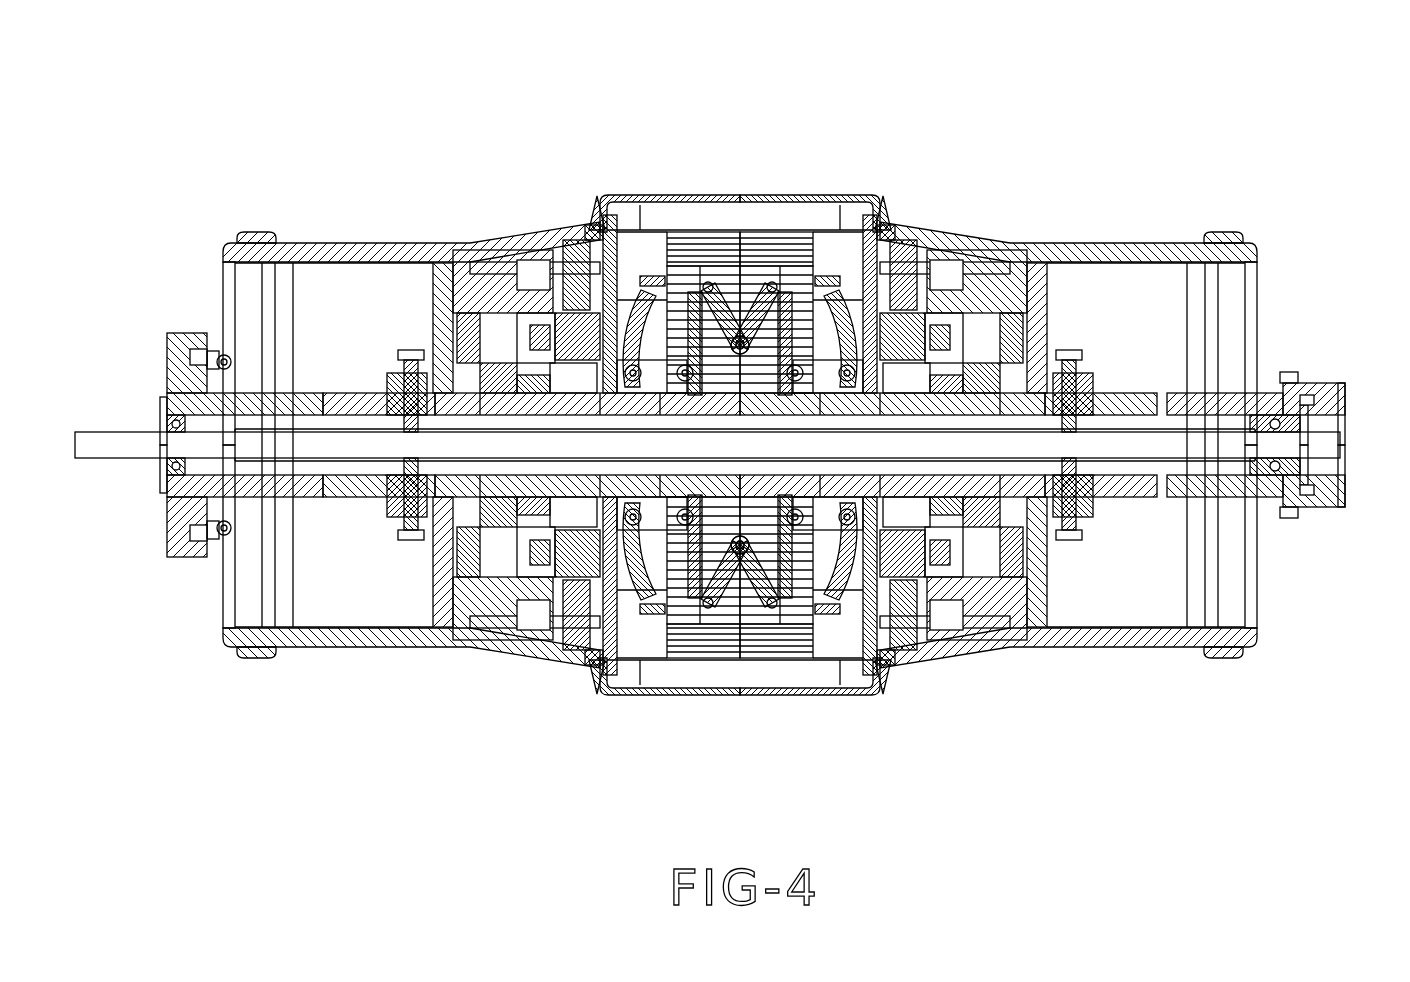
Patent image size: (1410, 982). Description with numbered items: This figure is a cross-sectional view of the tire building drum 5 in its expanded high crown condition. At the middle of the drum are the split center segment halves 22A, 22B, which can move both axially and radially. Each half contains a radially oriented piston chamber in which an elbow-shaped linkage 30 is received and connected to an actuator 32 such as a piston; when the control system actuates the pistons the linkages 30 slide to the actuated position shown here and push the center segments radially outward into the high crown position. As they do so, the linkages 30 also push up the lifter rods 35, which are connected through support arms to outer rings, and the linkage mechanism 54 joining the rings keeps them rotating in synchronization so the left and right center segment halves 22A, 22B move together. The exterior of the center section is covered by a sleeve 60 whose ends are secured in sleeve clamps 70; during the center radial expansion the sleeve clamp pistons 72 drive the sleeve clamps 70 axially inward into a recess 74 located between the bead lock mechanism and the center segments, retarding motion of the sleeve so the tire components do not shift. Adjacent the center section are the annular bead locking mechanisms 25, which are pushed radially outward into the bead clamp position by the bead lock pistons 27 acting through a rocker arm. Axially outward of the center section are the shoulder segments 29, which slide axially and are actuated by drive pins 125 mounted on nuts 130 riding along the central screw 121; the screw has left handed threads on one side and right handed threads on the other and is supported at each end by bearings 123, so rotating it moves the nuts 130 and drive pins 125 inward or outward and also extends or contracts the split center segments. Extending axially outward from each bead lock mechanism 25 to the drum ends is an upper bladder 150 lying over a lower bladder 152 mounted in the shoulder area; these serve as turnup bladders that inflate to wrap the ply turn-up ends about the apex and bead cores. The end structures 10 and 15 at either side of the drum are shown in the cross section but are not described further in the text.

The tire building drum 5 is at (150, 160).
The left end flange 10 is at (185, 333).
The right end flange 15 is at (1345, 398).
The center segment half 22A is at (818, 245).
The center segment half 22B is at (668, 245).
The bead locking mechanism 25 is at (575, 240).
The bead lock piston 27 is at (540, 323).
The shoulder segment 29 is at (605, 665).
The elbow-shaped linkage 30 is at (640, 292).
The actuator 32 is at (545, 585).
The lifter rod 35 is at (700, 240).
The linkage mechanism 54 is at (740, 336).
The sleeve 60 is at (790, 196).
The sleeve clamp 70 is at (597, 196).
The sleeve clamp piston 72 is at (487, 337).
The recess 74 is at (895, 660).
The central screw 121 is at (125, 450).
The bearing 123 is at (163, 410).
The drive pin 125 is at (404, 372).
The nut 130 is at (378, 462).
The upper bladder 150 is at (250, 232).
The lower bladder 152 is at (225, 260).